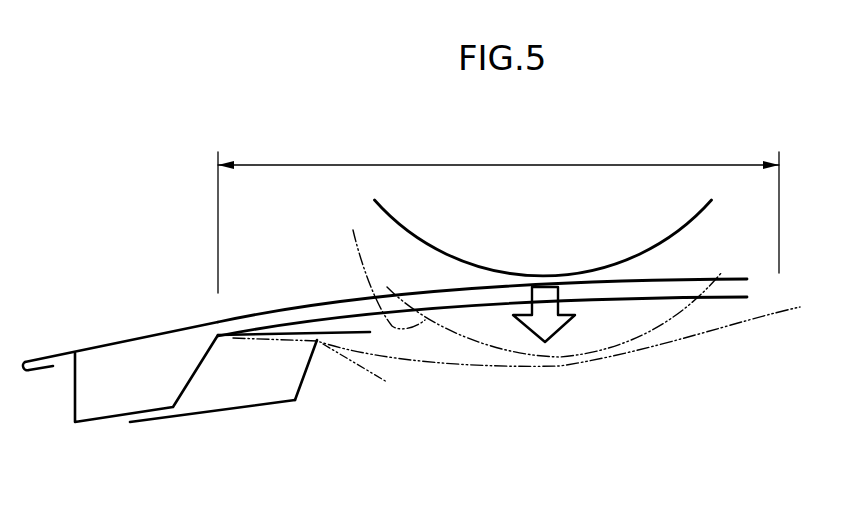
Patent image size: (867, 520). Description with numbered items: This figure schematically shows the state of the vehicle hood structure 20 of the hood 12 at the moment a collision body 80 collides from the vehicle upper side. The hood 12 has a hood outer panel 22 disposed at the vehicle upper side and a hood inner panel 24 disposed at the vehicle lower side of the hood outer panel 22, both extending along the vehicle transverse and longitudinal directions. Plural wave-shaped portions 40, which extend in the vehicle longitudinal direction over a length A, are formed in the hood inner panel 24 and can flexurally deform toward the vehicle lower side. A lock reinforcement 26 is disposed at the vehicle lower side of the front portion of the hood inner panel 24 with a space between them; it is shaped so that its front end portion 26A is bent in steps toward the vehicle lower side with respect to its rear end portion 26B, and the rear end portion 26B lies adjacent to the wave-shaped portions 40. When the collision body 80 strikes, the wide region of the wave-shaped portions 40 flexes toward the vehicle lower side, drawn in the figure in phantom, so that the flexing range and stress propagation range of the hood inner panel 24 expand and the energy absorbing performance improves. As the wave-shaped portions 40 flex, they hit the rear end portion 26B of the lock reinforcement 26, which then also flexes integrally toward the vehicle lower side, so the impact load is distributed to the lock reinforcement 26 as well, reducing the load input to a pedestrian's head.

The hood 12 is at (181, 286).
The vehicle hood structure 20 is at (290, 297).
The hood outer panel 22 is at (162, 323).
The hood inner panel 24 is at (725, 300).
The lock reinforcement 26 is at (304, 383).
The front end portion 26A is at (152, 424).
The rear end portion 26B is at (320, 342).
The wave-shaped portions 40 is at (637, 297).
The collision body 80 is at (400, 224).
The length A is at (498, 165).